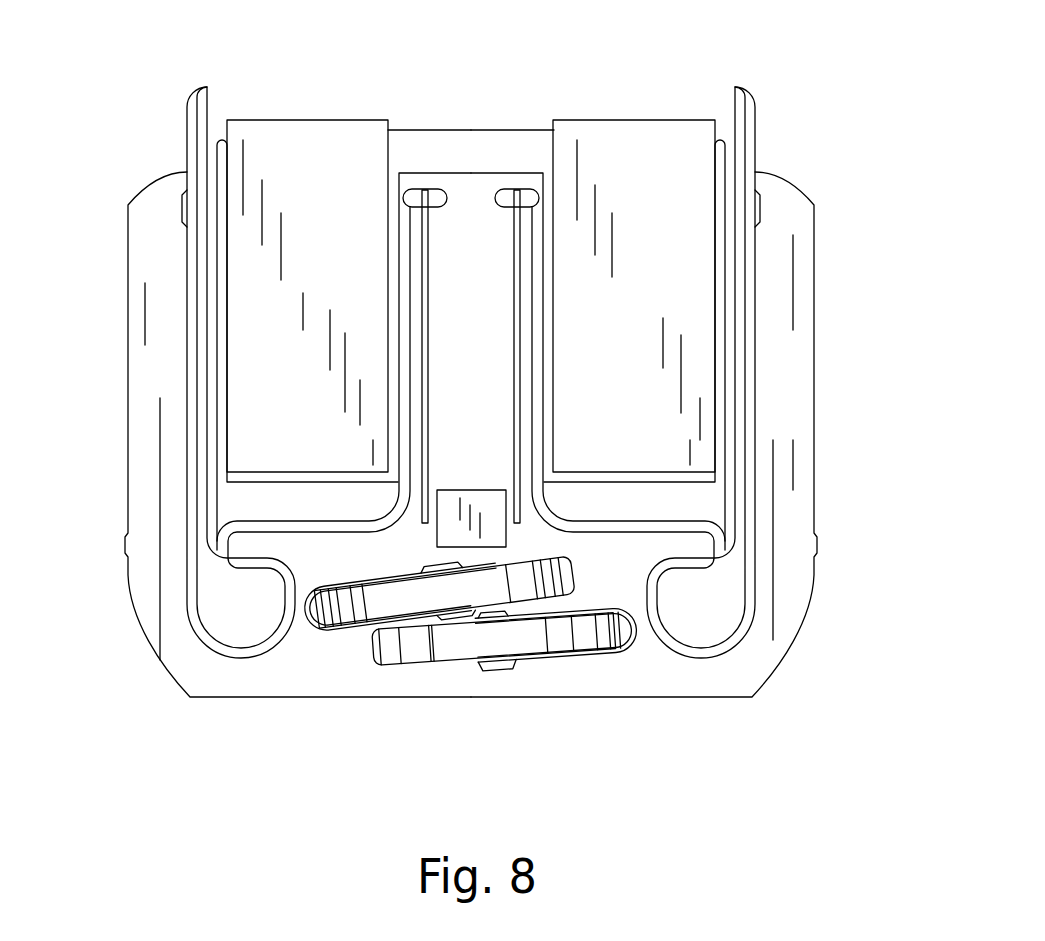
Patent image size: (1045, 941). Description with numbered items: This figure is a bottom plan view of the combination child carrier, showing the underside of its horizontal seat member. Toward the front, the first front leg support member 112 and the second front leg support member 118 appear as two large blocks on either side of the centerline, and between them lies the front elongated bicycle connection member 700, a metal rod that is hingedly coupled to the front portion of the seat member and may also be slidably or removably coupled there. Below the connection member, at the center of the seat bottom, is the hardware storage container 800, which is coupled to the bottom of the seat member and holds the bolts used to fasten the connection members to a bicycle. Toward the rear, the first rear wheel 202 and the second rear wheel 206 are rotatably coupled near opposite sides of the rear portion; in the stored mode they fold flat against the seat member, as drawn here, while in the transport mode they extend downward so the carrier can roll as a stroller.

The first front leg support member 112 is at (293, 173).
The second front leg support member 118 is at (650, 165).
The front elongated bicycle connection member 700 is at (527, 198).
The hardware storage container 800 is at (488, 510).
The first rear wheel 202 is at (390, 604).
The second rear wheel 206 is at (557, 637).